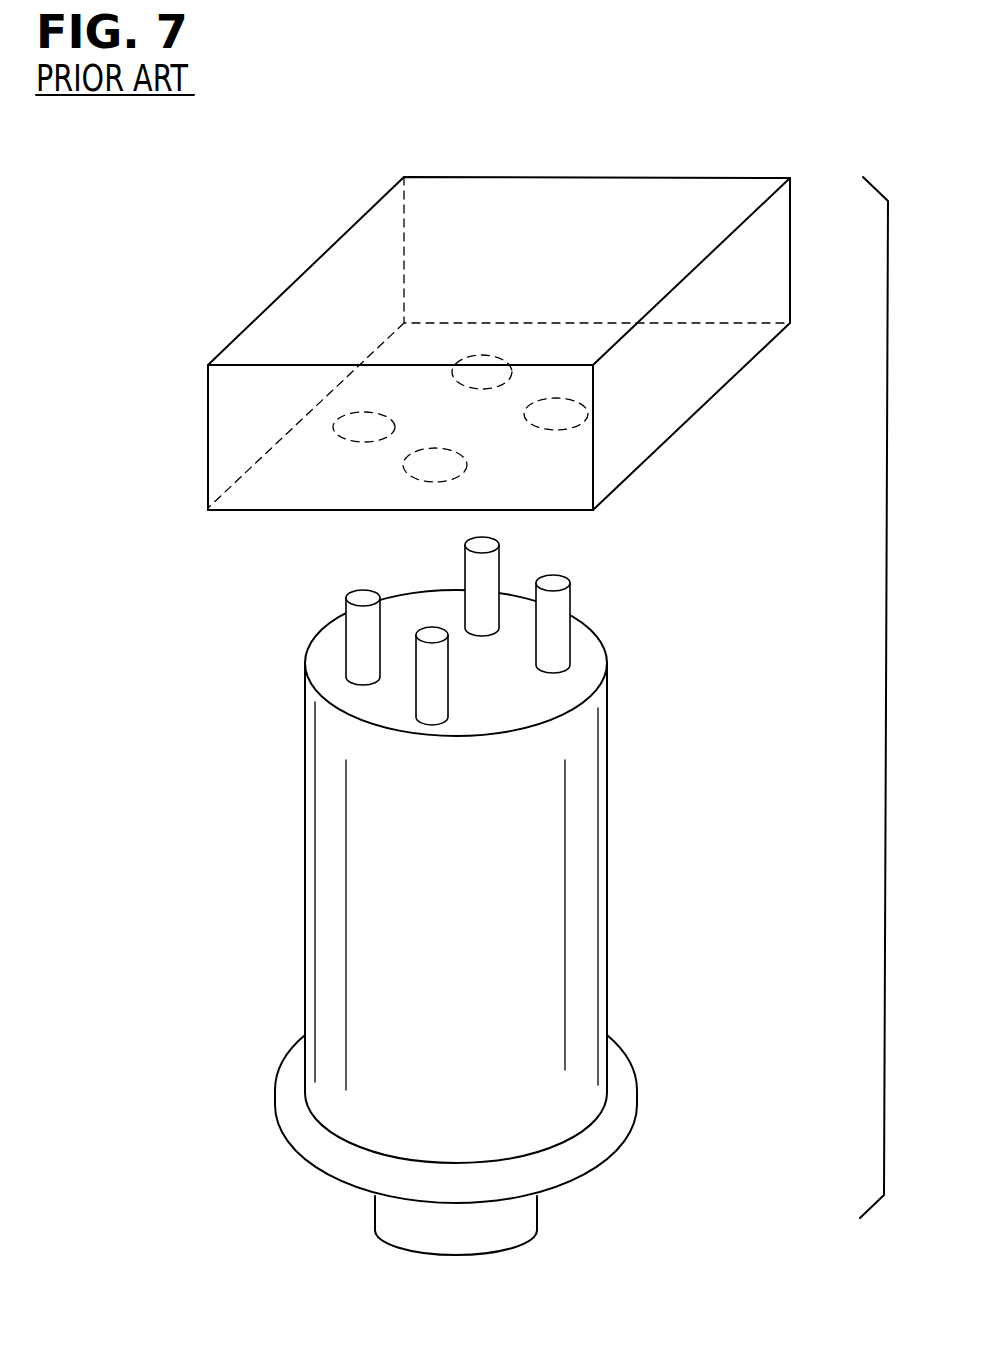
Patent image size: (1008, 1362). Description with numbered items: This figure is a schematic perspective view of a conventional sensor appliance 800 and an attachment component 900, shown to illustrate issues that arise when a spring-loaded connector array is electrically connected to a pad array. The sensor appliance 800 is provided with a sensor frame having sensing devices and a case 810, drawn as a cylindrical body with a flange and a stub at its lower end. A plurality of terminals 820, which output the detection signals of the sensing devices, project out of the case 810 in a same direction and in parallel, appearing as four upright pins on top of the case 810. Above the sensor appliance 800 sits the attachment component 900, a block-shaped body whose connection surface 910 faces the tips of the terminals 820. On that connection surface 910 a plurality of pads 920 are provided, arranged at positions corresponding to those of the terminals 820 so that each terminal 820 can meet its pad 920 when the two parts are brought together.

The sensor appliance 800 is at (449, 892).
The case 810 is at (570, 777).
The terminals 820 is at (488, 565).
The attachment component 900 is at (468, 368).
The connection surface 910 is at (288, 512).
The pads 920 is at (480, 358).